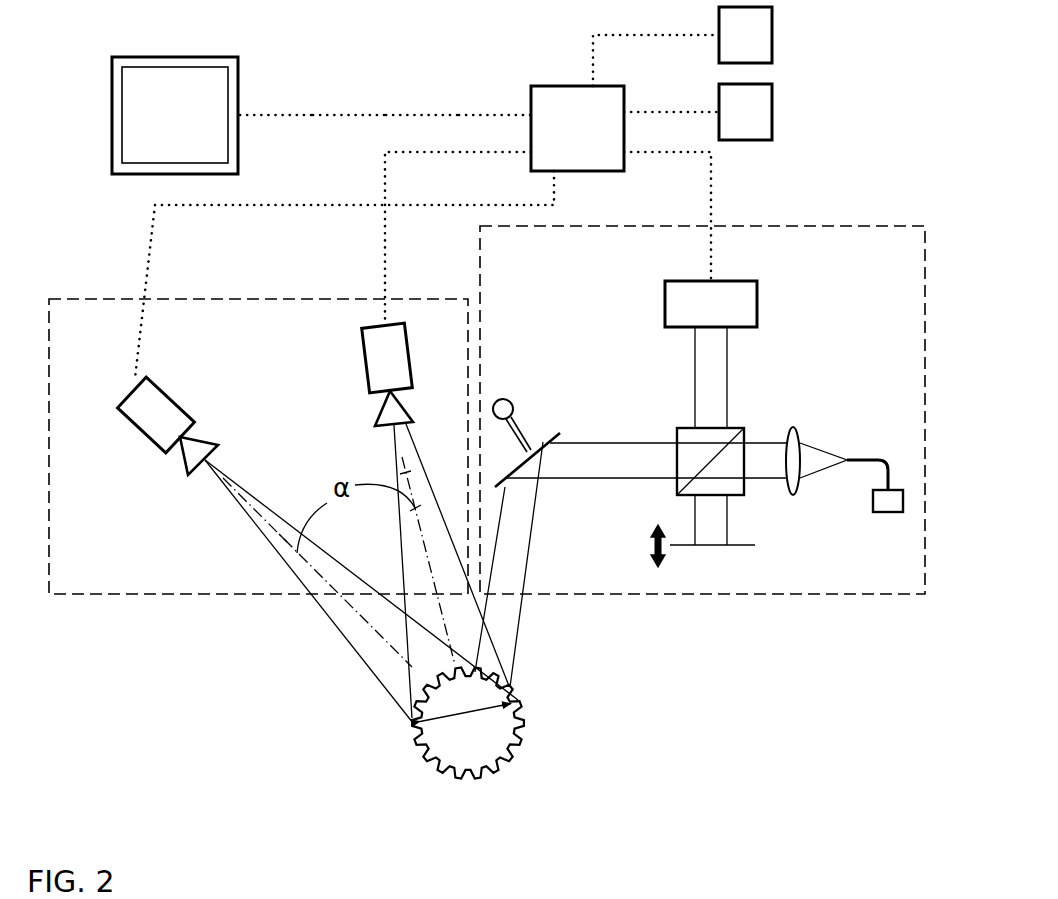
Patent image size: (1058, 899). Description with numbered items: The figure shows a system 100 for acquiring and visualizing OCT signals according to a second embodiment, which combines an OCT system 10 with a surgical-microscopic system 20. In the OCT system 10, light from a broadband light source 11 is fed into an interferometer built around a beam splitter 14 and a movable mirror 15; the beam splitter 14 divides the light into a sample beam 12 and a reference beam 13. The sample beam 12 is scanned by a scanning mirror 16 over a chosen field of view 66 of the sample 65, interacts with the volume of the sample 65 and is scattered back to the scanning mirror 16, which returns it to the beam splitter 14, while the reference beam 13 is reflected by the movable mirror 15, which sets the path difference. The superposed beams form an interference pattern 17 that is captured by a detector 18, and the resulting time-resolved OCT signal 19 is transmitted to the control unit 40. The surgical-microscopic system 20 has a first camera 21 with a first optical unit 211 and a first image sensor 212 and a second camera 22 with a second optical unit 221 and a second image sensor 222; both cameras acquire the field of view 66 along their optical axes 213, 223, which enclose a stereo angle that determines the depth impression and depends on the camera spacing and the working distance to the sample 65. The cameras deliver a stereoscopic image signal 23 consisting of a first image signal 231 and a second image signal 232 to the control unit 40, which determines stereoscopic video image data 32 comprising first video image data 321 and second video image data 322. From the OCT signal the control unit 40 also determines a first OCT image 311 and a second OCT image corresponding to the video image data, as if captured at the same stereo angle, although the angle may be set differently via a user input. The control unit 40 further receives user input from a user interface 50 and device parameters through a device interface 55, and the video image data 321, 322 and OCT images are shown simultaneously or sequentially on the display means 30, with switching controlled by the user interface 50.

The OCT system 10 is at (842, 226).
The broadband light source 11 is at (887, 512).
The sample beam 12 is at (493, 553).
The reference beam 13 is at (695, 527).
The beam splitter 14 is at (731, 427).
The movable mirror 15 is at (743, 547).
The scanning mirror 16 is at (513, 401).
The interference pattern 17 is at (695, 378).
The detector 18 is at (697, 316).
The OCT signal 19 is at (712, 200).
The surgical-microscopic system 20 is at (214, 298).
The first camera 21 is at (492, 517).
The second camera 22 is at (590, 520).
The stereoscopic image signal 23 is at (522, 461).
The display means 30 is at (161, 128).
The stereoscopic video image data 32 is at (648, 477).
The control unit 40 is at (563, 141).
The user interface 50 is at (731, 125).
The device interface 55 is at (731, 48).
The sample 65 is at (428, 760).
The field of view 66 is at (513, 735).
The system 100 is at (110, 273).
The first optical unit 211 is at (187, 465).
The first image sensor 212 is at (140, 433).
The first optical axis 213 is at (283, 538).
The second optical unit 221 is at (375, 417).
The second image sensor 222 is at (363, 350).
The second optical axis 223 is at (403, 473).
The first image signal 231 is at (310, 203).
The second image signal 232 is at (384, 246).
The first OCT image 311 is at (397, 77).
The first video image data 321 is at (648, 463).
The second video image data 322 is at (868, 787).